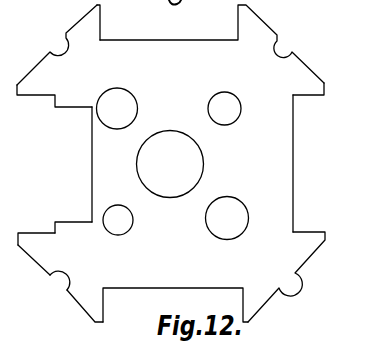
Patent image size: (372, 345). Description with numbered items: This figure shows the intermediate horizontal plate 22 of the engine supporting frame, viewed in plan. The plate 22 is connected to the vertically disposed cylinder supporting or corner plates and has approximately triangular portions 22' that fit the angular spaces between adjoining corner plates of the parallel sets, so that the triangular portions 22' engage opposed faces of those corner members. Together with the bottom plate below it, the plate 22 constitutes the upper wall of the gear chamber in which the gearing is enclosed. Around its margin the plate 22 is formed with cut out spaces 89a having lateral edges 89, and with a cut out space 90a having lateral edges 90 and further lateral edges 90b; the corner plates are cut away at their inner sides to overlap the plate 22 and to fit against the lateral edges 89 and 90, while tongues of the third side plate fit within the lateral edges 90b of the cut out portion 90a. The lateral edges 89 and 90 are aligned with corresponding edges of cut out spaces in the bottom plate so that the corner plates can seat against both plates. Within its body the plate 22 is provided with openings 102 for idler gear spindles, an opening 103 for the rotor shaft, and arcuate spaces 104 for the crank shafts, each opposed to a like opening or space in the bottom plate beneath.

The horizontal plate 22 is at (171, 163).
The triangular portion 22' is at (226, 44).
The lateral edge 89 is at (102, 22).
The cut out space 89a is at (307, 172).
The lateral edge 90 is at (27, 97).
The cut out space 90a is at (42, 153).
The lateral edge 90b is at (63, 220).
The opening 102 is at (235, 208).
The opening 103 is at (202, 165).
The arcuate space 104 is at (63, 275).